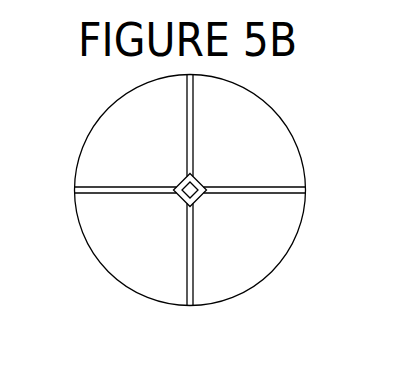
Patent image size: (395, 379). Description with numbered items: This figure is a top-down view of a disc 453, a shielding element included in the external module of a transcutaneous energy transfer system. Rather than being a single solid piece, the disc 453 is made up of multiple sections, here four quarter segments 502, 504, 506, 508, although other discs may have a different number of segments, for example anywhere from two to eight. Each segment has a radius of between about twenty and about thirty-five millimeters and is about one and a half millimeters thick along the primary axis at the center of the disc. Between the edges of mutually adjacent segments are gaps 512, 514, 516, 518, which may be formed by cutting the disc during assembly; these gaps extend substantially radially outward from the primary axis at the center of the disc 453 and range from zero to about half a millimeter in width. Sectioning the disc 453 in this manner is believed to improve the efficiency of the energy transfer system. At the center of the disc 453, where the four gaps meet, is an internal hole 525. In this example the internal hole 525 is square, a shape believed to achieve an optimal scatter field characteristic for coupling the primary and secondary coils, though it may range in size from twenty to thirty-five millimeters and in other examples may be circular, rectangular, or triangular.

The disc 453 is at (198, 372).
The quarter segment 502 is at (133, 248).
The quarter segment 504 is at (133, 133).
The quarter segment 506 is at (248, 133).
The quarter segment 508 is at (248, 248).
The gap 512 is at (131, 186).
The gap 514 is at (189, 115).
The gap 516 is at (253, 193).
The gap 518 is at (183, 247).
The internal hole 525 is at (200, 187).